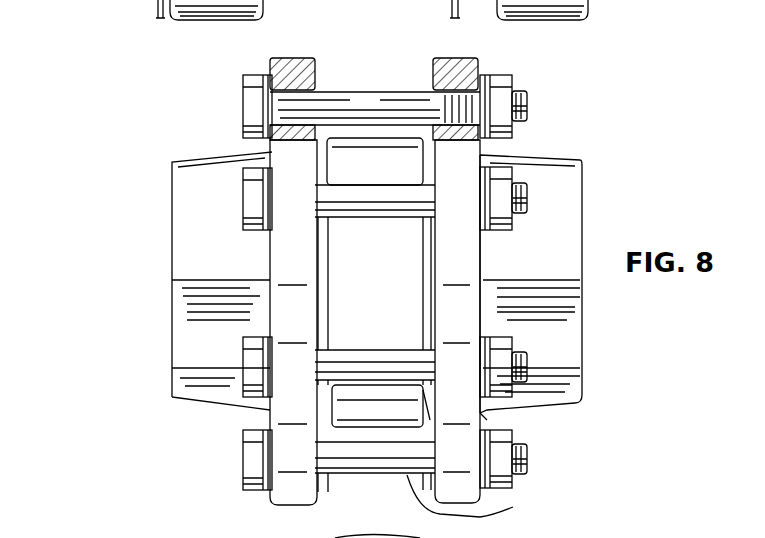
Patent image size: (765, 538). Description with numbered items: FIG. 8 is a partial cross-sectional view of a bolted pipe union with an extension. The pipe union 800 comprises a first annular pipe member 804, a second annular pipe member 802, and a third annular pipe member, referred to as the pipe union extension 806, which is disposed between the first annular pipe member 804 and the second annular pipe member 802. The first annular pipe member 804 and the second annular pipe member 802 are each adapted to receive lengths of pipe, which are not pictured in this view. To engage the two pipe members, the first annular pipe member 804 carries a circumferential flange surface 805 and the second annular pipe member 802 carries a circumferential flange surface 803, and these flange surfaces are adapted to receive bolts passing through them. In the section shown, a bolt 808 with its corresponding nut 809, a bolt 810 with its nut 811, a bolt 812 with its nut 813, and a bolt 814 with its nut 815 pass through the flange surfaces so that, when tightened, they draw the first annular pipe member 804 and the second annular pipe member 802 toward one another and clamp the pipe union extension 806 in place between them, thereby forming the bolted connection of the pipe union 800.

The pipe union 800 is at (203, 119).
The second annular pipe member 802 is at (188, 217).
The circumferential flange surface 803 is at (290, 57).
The first annular pipe member 804 is at (558, 179).
The circumferential flange surface 805 is at (450, 57).
The pipe union extension 806 is at (390, 275).
The bolt 808 is at (293, 110).
The nut 809 is at (500, 108).
The bolt 810 is at (368, 200).
The nut 811 is at (510, 230).
The bolt 812 is at (342, 362).
The nut 813 is at (510, 340).
The bolt 814 is at (513, 507).
The nut 815 is at (505, 430).